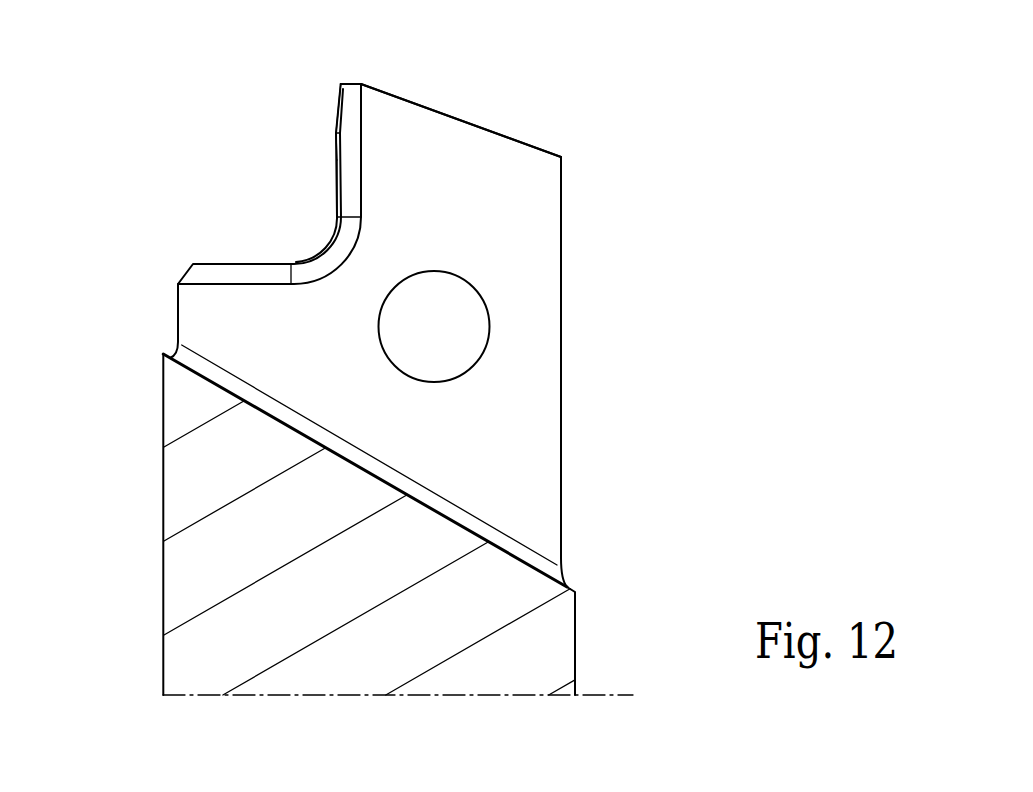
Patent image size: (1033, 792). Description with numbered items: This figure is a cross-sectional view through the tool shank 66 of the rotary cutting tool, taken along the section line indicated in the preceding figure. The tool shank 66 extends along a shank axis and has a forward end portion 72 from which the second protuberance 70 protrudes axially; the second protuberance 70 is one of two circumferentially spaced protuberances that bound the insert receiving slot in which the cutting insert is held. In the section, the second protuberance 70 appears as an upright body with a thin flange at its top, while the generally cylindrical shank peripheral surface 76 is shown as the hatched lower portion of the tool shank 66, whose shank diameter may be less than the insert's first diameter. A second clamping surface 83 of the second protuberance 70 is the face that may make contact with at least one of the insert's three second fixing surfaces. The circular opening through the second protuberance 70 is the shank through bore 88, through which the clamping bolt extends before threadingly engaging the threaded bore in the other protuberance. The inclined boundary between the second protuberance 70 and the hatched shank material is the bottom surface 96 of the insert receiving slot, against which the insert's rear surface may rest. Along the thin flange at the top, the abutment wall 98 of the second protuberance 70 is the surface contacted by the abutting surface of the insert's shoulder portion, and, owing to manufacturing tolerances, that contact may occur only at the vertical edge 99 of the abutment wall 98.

The tool shank 66 is at (590, 130).
The second protuberance 70 is at (433, 150).
The forward end portion 72 is at (535, 245).
The shank peripheral surface 76 is at (162, 562).
The second clamping surface 83 is at (476, 224).
The shank through bore 88 is at (419, 340).
The bottom surface 96 is at (498, 545).
The abutment wall 98 is at (335, 153).
The vertical edge 99 is at (335, 195).